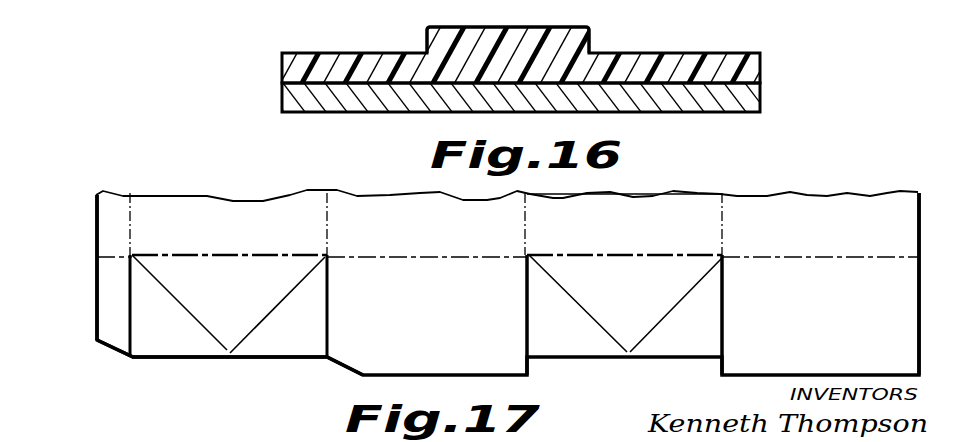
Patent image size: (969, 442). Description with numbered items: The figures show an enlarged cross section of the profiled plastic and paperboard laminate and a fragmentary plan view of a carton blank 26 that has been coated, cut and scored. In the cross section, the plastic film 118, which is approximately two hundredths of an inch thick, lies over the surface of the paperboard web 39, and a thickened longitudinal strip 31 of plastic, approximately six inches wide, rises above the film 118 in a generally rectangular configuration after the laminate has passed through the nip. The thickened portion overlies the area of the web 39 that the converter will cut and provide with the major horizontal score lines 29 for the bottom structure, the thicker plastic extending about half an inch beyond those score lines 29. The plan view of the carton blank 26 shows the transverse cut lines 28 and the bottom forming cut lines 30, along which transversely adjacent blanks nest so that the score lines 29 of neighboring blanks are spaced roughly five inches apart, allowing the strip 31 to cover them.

In FIG. 16, the film 118 is at (746, 69).
In FIG. 16, the longitudinal strip 31 is at (580, 29).
In FIG. 17, the longitudinal strip 31 is at (657, 230).
In FIG. 16, the web 39 is at (723, 113).
In FIG. 17, the carton blank 26 is at (782, 206).
In FIG. 17, the transverse cut line 28 is at (96, 195).
In FIG. 17, the major horizontal score line 29 is at (447, 257).
In FIG. 17, the bottom forming cut line 30 is at (300, 358).